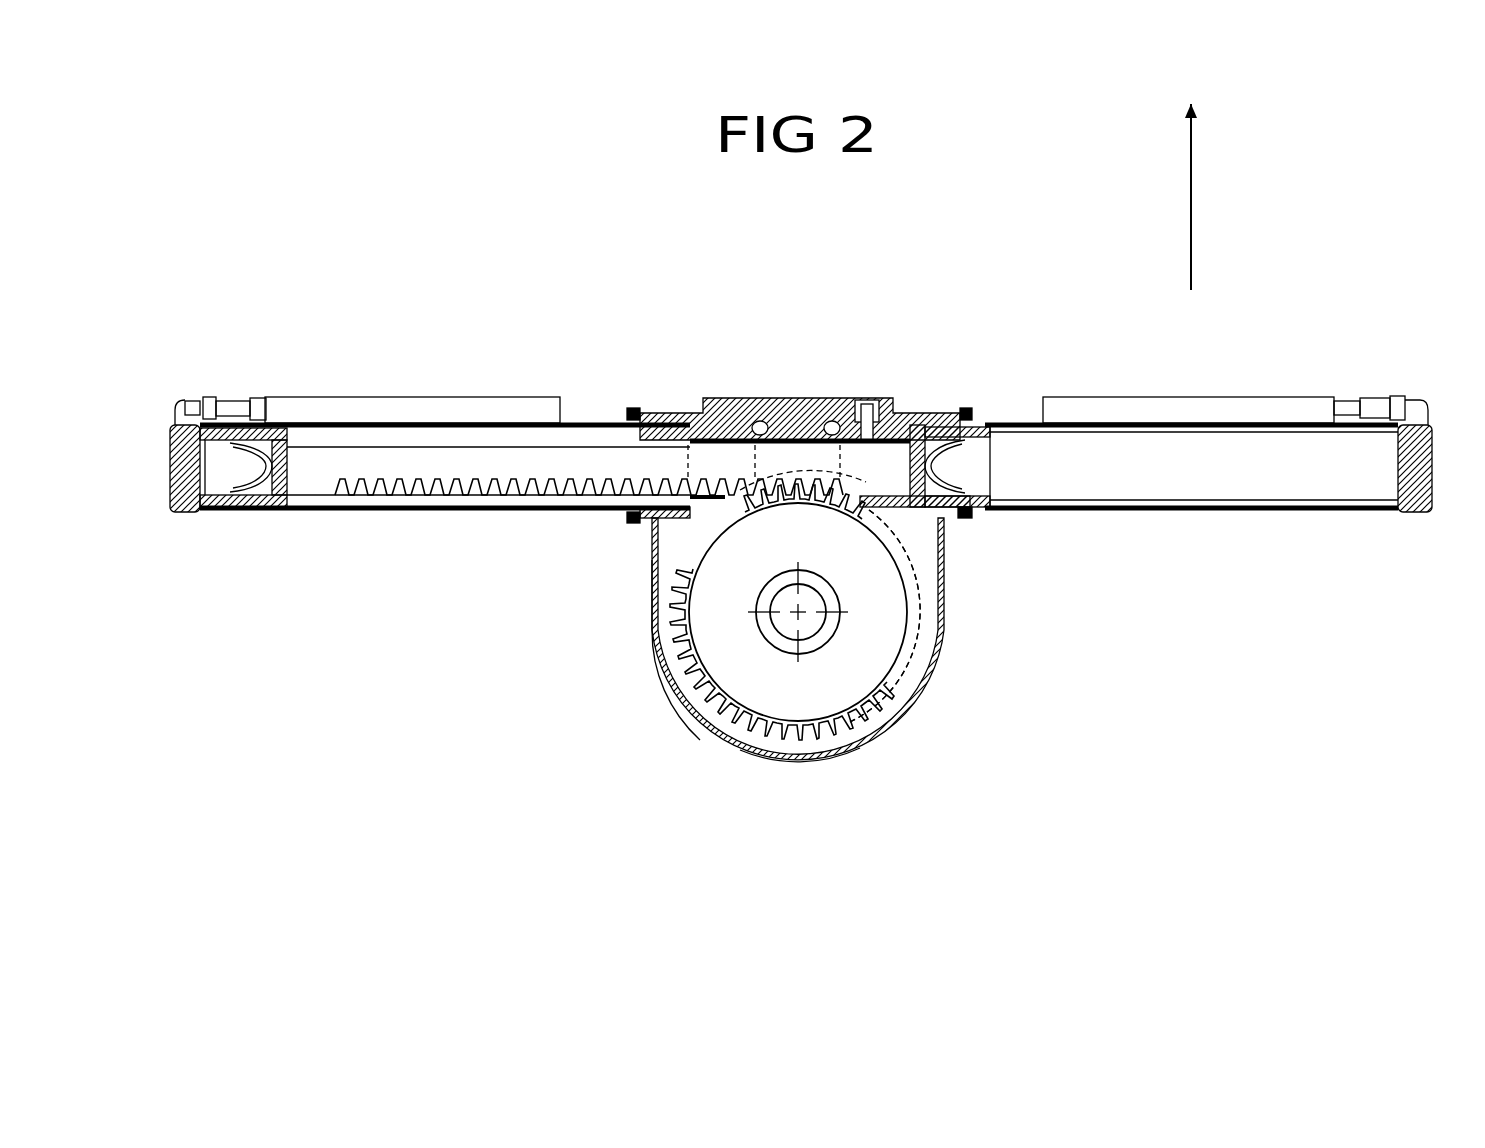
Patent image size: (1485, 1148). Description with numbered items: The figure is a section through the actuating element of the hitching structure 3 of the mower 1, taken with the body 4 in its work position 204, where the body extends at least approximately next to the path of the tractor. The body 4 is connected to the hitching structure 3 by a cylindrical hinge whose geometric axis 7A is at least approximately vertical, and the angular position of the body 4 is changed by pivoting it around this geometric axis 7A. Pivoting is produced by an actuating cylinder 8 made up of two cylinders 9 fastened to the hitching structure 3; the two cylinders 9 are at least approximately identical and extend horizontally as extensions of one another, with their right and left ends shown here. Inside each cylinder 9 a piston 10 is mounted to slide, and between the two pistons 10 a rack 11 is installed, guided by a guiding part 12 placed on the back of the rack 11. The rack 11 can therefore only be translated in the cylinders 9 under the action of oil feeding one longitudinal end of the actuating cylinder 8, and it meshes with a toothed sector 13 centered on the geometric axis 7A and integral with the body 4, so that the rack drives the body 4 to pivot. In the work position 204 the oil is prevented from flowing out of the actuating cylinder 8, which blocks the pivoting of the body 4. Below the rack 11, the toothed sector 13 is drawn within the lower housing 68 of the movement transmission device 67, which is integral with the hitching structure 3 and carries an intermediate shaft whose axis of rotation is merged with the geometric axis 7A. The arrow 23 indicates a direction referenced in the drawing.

The mower 1 is at (1330, 347).
The hitching structure 3 is at (646, 593).
The body 4 is at (903, 680).
The work position 204 is at (997, 654).
The geometric axis 7A is at (802, 616).
The actuating cylinder 8 is at (166, 434).
The cylinders 9 is at (376, 512).
The piston 10 is at (284, 432).
The rack 11 is at (582, 455).
The guiding part 12 is at (825, 418).
The toothed sector 13 is at (765, 683).
The direction arrow 23 is at (1193, 177).
The movement transmission device 67 is at (780, 756).
The lower housing 68 is at (670, 680).